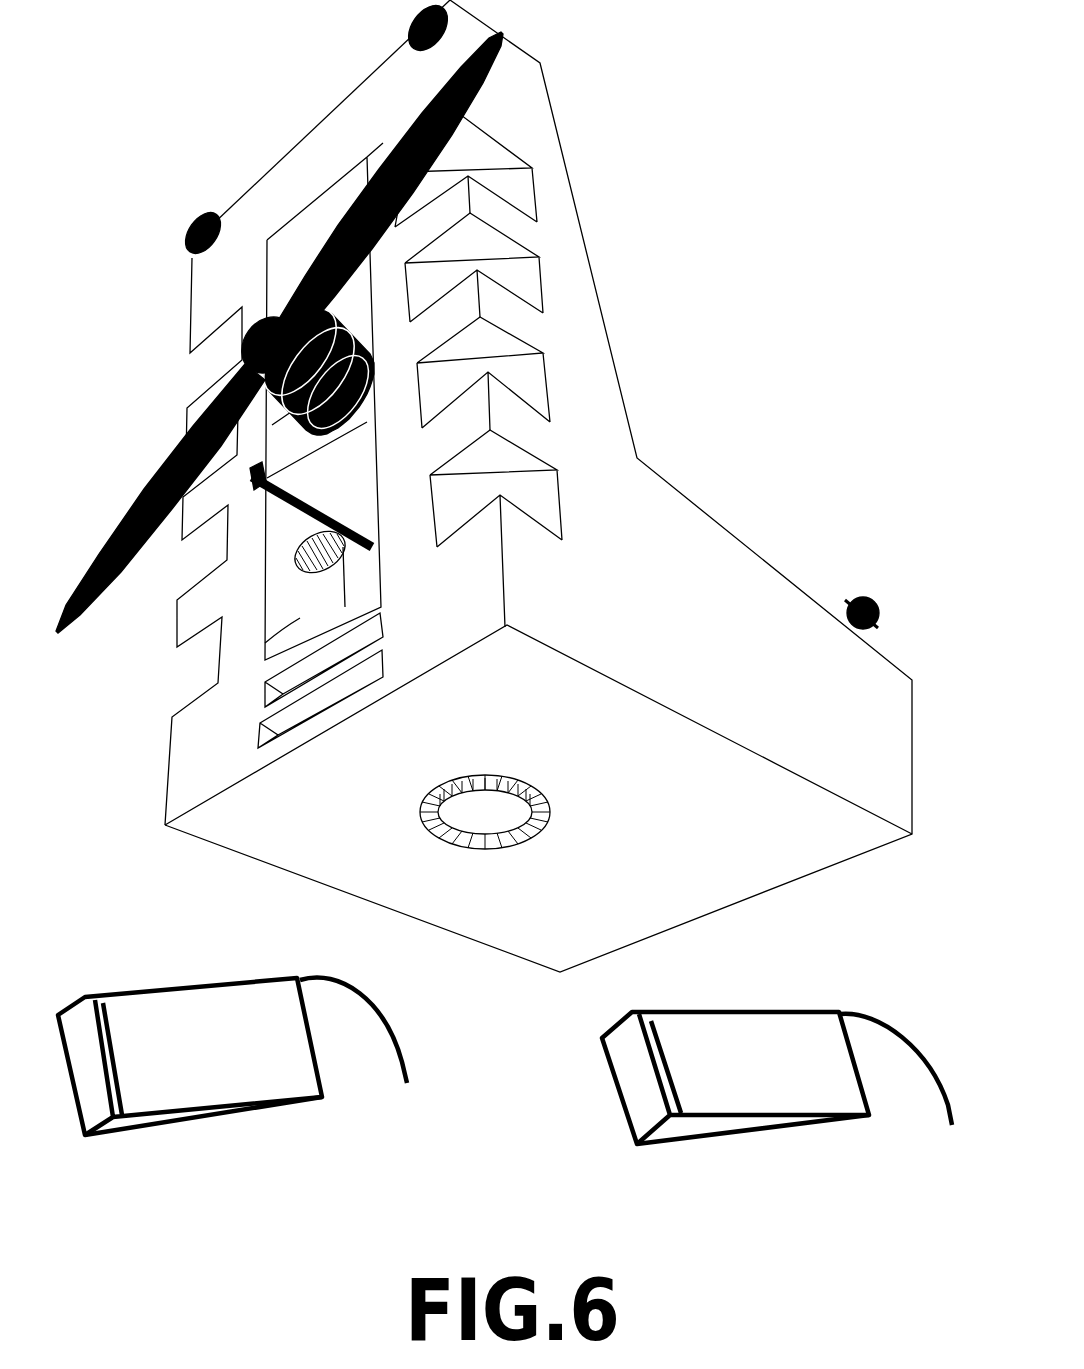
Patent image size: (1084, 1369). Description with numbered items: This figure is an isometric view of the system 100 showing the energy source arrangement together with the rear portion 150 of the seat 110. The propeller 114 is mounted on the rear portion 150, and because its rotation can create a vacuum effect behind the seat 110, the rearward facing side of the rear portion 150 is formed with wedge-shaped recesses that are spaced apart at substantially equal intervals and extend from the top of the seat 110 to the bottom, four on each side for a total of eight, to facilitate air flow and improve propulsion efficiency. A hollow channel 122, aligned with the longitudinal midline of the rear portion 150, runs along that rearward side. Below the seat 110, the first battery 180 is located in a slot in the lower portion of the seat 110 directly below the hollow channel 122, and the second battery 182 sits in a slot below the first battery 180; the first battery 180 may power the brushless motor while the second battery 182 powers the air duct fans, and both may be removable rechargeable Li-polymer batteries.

The system 100 is at (816, 268).
The seat 110 is at (550, 100).
The propeller 114 is at (108, 538).
The hollow channel 122 is at (300, 618).
The rear portion 150 is at (170, 167).
The first battery 180 is at (147, 1093).
The second battery 182 is at (740, 1103).